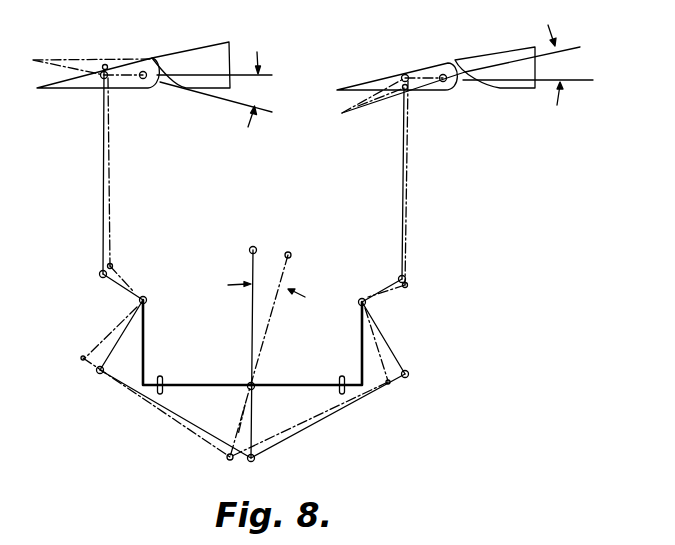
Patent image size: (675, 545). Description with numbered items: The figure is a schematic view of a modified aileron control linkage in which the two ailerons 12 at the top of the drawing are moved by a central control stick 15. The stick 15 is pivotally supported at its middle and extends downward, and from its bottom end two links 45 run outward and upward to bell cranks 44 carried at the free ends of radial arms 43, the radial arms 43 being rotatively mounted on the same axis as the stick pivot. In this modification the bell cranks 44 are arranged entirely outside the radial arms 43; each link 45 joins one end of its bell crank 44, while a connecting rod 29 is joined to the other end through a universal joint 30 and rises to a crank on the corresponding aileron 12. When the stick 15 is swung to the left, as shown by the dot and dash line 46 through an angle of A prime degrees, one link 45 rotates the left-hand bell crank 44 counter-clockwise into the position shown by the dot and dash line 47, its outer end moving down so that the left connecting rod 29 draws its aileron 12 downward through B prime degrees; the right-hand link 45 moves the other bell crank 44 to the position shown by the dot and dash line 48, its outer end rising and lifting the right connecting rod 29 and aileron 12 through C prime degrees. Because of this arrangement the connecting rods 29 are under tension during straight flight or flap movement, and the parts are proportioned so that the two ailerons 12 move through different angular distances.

The aileron 12 is at (64, 88).
The connecting rod 29 is at (103, 192).
The universal joint 30 is at (100, 277).
The radial arm 43 is at (145, 347).
The bell crank 44 is at (118, 341).
The link 45 is at (326, 416).
The dot and dash line 46 is at (243, 415).
The dot and dash line 47 is at (128, 291).
The dot and dash line 48 is at (383, 296).
The stick 15 is at (253, 428).